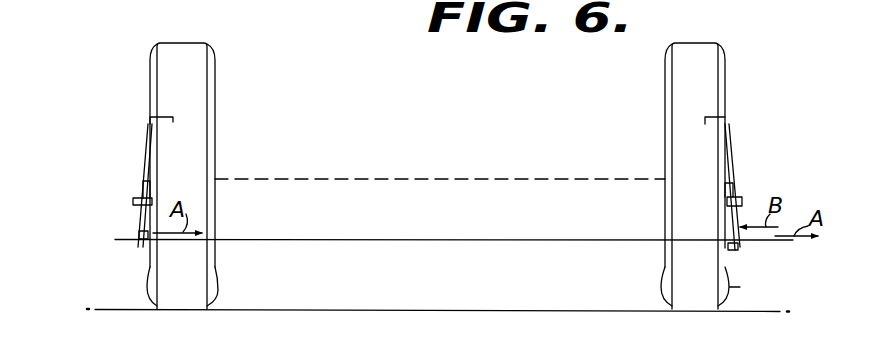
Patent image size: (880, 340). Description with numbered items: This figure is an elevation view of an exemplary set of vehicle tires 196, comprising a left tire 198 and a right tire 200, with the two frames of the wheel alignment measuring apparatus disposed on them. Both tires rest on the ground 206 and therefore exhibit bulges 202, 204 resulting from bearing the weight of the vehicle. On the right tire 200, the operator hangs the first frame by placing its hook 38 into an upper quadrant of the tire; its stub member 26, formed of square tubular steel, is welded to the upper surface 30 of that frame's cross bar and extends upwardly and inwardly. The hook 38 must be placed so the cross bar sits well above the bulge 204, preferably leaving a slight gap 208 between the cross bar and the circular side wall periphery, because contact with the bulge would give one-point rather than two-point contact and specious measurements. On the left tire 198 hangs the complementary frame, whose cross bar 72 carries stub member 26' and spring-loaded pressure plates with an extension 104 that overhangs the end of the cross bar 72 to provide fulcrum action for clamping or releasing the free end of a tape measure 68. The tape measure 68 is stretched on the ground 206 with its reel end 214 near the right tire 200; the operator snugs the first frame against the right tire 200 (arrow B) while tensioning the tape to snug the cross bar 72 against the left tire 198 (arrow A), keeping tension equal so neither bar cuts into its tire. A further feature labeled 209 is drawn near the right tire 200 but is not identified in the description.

The set of vehicle tires 196 is at (470, 96).
The left tire 198 is at (207, 147).
The right tire 200 is at (672, 138).
The hook 38 is at (712, 115).
The stub member 26' is at (130, 182).
The stub member 26 is at (710, 187).
The extension 104 is at (140, 237).
The cross bar 72 is at (134, 253).
The gap 208 is at (147, 249).
The bulge 202 is at (148, 285).
The tape measure 68 is at (452, 216).
The ground 206 is at (422, 283).
The right stop block 209 is at (728, 255).
The upper surface 30 is at (738, 258).
The reel end 214 is at (794, 242).
The bulge 204 is at (744, 293).